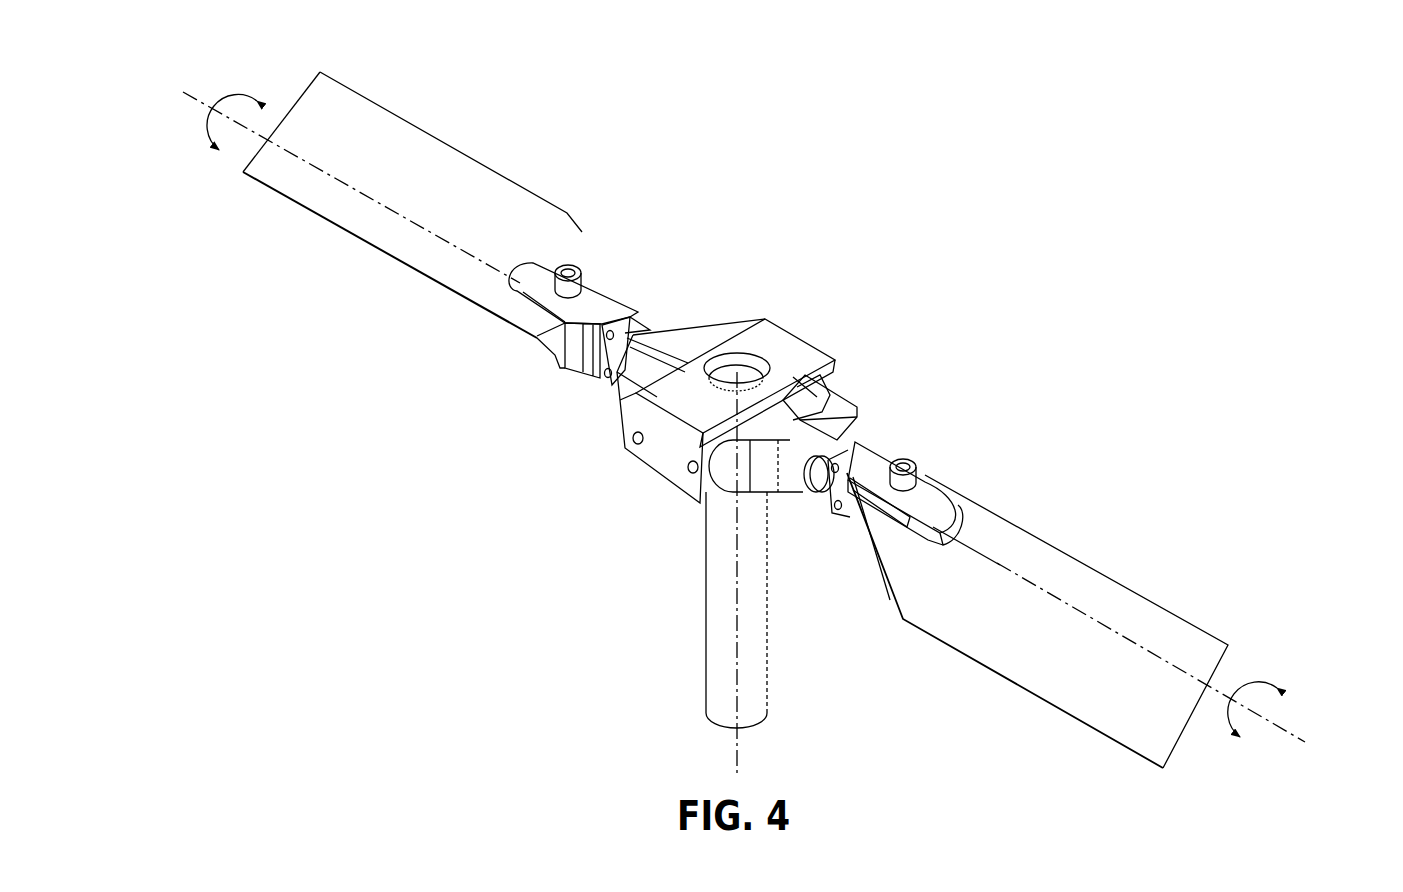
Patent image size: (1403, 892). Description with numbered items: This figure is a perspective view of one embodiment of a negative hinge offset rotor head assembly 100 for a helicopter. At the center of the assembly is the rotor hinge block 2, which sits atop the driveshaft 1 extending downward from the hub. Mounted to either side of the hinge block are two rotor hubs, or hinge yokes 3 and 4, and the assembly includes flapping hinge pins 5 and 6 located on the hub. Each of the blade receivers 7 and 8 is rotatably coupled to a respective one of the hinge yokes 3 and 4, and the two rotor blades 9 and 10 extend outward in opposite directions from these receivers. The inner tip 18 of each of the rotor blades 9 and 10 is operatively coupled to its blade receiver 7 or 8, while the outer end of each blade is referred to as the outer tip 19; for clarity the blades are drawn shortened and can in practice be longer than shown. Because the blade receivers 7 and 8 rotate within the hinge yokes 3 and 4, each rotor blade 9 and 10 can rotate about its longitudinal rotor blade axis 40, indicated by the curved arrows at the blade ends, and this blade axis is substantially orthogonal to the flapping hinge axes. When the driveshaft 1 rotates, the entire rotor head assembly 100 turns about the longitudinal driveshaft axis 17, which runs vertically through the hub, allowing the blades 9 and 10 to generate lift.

The negative hinge offset rotor head assembly 100 is at (769, 84).
The driveshaft 1 is at (747, 635).
The rotor hinge block 2 is at (787, 350).
The rotor hub or hinge yoke 3 is at (692, 343).
The rotor hub or hinge yoke 4 is at (840, 408).
The flapping hinge pin 5 is at (633, 442).
The flapping hinge pin 6 is at (693, 467).
The blade receiver 7 is at (610, 303).
The blade receiver 8 is at (872, 460).
The rotor blade 9 is at (475, 215).
The rotor blade 10 is at (1005, 542).
The longitudinal driveshaft axis 17 is at (739, 748).
The inner tip 18 is at (569, 252).
The outer tip 19 is at (298, 100).
The longitudinal rotor blade axis 40 is at (200, 105).